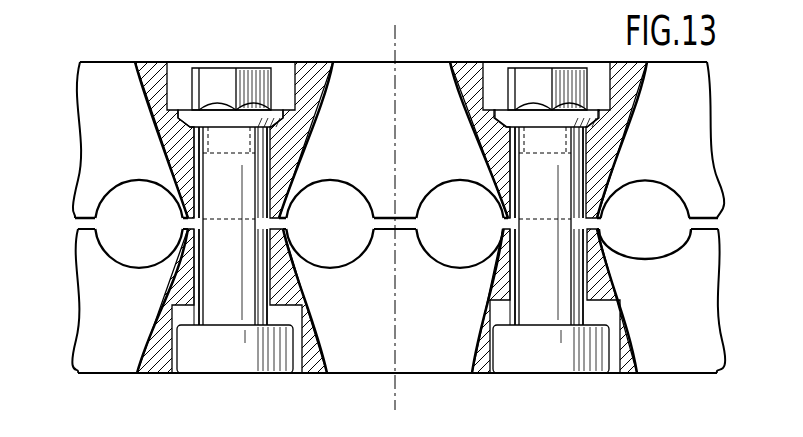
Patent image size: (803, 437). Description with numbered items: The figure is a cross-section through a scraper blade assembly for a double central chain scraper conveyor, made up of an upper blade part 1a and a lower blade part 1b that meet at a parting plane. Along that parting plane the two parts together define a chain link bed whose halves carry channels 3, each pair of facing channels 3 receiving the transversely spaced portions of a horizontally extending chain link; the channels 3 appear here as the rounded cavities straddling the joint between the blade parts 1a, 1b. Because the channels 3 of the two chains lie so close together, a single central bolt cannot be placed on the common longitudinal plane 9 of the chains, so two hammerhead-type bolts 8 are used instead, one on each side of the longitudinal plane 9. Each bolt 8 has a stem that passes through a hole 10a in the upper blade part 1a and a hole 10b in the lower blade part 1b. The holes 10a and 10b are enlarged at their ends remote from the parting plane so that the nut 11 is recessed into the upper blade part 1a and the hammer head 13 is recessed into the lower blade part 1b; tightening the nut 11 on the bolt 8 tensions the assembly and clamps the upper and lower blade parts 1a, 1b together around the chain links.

The upper blade part 1a is at (685, 97).
The lower blade part 1b is at (705, 316).
The channels 3 is at (122, 258).
The hammerhead-type bolt 8 is at (213, 168).
The longitudinal plane of the chains 9 is at (397, 47).
The hole in upper blade part 10a is at (262, 178).
The hole in lower blade part 10b is at (262, 283).
The recessed nut 11 is at (243, 80).
The hammer head 13 is at (226, 362).